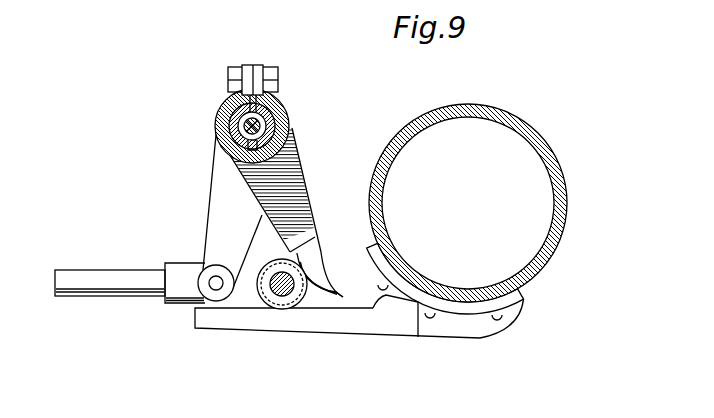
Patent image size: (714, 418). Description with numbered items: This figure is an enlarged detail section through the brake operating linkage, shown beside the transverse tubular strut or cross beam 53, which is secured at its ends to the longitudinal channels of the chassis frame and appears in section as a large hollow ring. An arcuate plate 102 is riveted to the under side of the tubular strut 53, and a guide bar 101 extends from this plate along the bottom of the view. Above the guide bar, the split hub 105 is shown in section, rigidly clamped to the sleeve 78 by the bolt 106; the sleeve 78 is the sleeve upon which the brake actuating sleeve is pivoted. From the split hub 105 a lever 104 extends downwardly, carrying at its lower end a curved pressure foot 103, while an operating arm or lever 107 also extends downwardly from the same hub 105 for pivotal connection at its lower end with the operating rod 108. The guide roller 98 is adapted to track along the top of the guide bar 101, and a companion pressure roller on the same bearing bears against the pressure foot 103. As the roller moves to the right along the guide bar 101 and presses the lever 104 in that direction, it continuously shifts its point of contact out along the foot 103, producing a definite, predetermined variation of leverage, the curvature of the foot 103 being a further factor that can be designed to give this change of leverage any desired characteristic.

The tubular strut or cross beam 53 is at (557, 249).
The sleeve 78 is at (229, 118).
The guide roller 98 is at (276, 268).
The guide bar 101 is at (308, 328).
The arcuate plate 102 is at (418, 332).
The pressure foot 103 is at (326, 277).
The lever 104 is at (289, 189).
The split hub 105 is at (294, 120).
The bolt 106 is at (282, 79).
The operating arm or lever 107 is at (212, 213).
The operating rod 108 is at (97, 280).